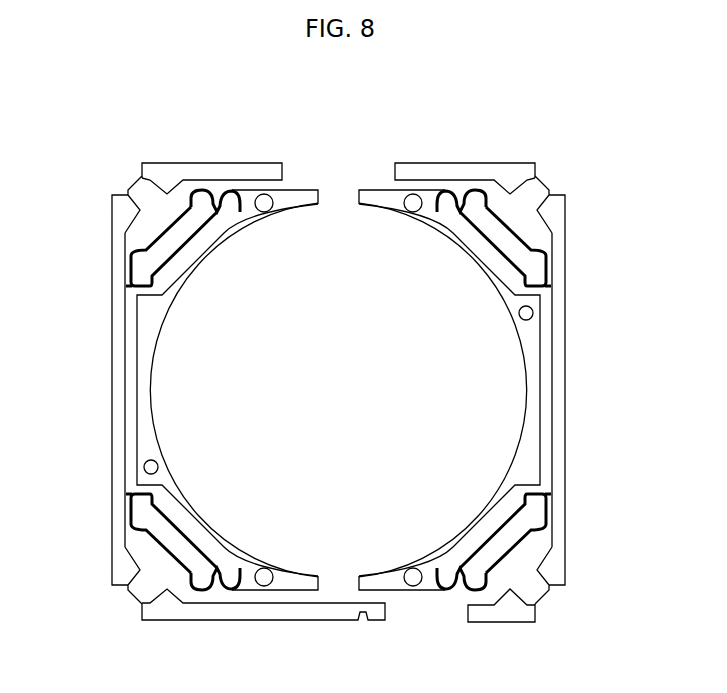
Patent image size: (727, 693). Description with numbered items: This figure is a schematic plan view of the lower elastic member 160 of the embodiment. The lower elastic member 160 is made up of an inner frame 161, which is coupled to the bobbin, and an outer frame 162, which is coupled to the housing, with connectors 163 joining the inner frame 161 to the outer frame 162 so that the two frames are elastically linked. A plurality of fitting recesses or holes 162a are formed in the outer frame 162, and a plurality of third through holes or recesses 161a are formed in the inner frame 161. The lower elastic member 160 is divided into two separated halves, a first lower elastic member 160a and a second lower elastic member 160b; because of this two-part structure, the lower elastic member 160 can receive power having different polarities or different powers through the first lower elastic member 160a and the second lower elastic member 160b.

The lower elastic member 160 is at (556, 122).
The first lower elastic member 160a is at (178, 154).
The second lower elastic member 160b is at (463, 150).
The inner frame 161 is at (137, 380).
The third through holes or recesses 161a is at (264, 195).
The outer frame 162 is at (118, 418).
The fitting recesses or holes 162a is at (158, 597).
The connector 163 is at (125, 233).